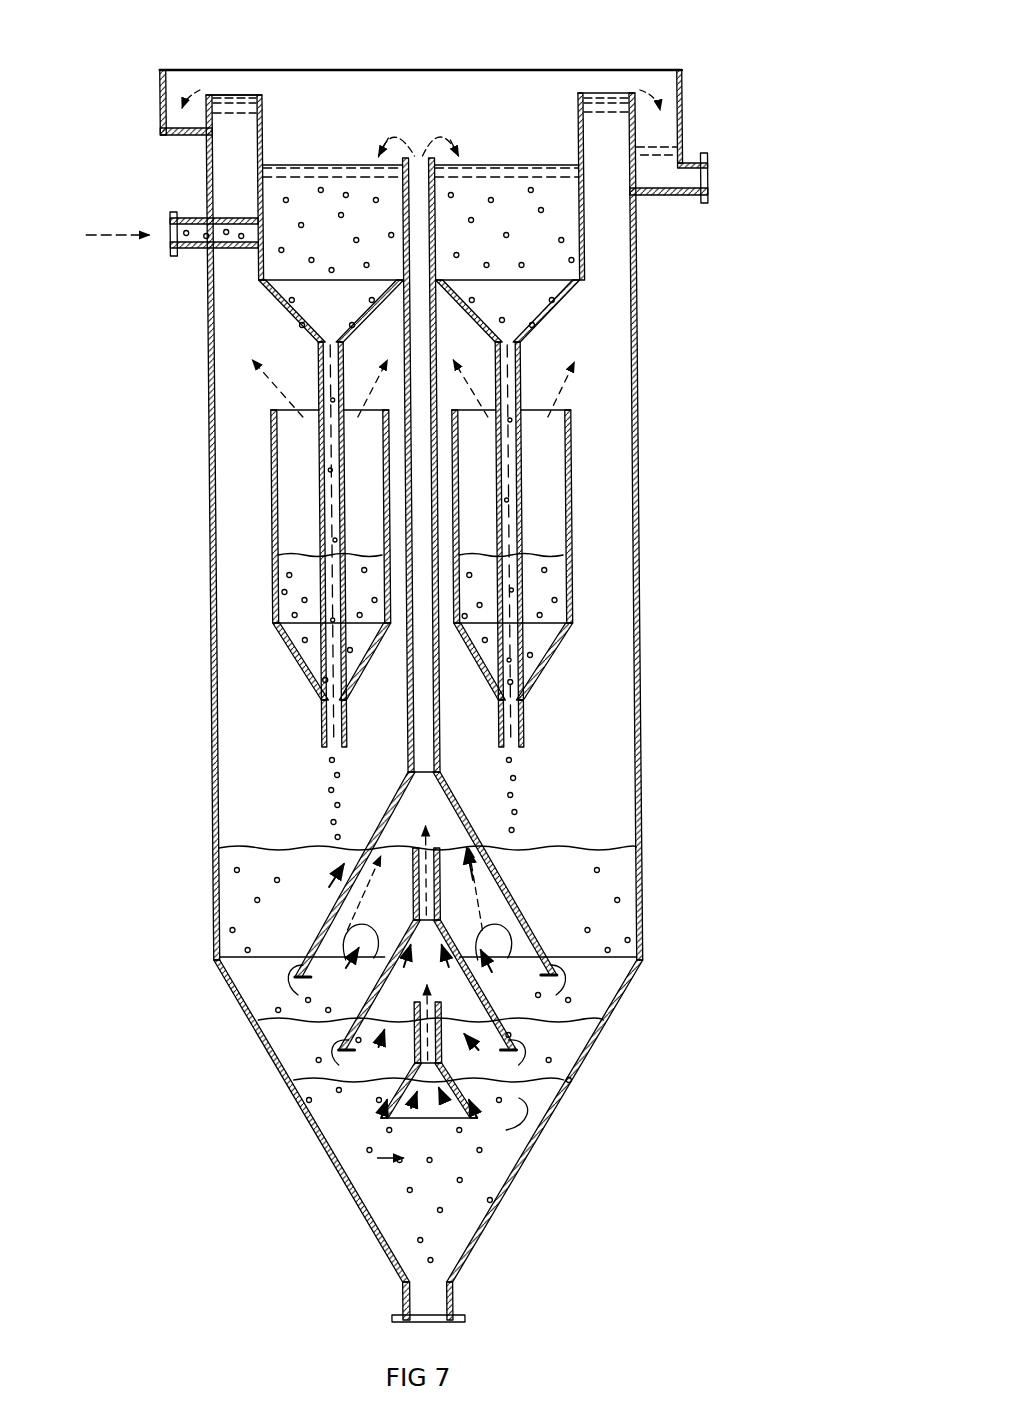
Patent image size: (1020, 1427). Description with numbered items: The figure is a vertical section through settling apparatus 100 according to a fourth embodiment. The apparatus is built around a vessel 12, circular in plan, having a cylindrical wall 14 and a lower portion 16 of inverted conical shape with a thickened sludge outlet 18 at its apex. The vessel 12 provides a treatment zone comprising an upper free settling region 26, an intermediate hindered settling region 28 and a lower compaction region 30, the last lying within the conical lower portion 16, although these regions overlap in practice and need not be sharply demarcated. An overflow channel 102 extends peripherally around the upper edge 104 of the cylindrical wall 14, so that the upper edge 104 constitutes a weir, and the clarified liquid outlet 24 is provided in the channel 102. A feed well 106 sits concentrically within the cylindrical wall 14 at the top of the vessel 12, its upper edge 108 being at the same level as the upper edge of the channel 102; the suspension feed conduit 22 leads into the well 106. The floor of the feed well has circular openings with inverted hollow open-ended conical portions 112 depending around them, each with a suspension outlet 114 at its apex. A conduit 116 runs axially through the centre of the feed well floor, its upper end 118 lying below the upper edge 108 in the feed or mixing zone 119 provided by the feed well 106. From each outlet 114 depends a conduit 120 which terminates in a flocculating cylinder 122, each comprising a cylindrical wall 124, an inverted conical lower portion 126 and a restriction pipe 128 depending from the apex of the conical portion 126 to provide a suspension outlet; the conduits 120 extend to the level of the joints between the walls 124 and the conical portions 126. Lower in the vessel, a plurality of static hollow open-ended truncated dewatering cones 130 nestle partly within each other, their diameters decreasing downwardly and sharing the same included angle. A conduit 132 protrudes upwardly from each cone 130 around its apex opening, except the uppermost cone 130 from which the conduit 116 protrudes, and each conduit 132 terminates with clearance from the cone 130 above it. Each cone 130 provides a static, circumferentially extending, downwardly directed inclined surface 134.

The vessel 12 is at (674, 610).
The cylindrical wall 14 is at (636, 694).
The lower portion 16 is at (494, 1195).
The thickened sludge outlet 18 is at (443, 1300).
The suspension feed conduit 22 is at (197, 249).
The clarified liquid outlet 24 is at (679, 196).
The upper free settling region 26 is at (258, 455).
The intermediate hindered settling region 28 is at (262, 905).
The lower compaction region 30 is at (350, 1169).
The settling apparatus 100 is at (744, 443).
The overflow channel 102 is at (160, 97).
The upper edge 104 is at (208, 95).
The feed well 106 is at (584, 258).
The upper edge 108 is at (578, 86).
The conical portions 112 is at (283, 297).
The suspension outlet 114 is at (321, 300).
The conduit 116 is at (404, 725).
The upper end 118 is at (444, 171).
The feed or mixing zone 119 is at (290, 128).
The conduit 120 is at (316, 470).
The flocculating cylinder 122 is at (256, 569).
The cylindrical wall 124 is at (273, 518).
The conical lower portion 126 is at (296, 667).
The restriction pipe 128 is at (316, 718).
The dewatering cone 130 is at (502, 883).
The conduit 132 is at (432, 870).
The inclined surface 134 is at (500, 948).